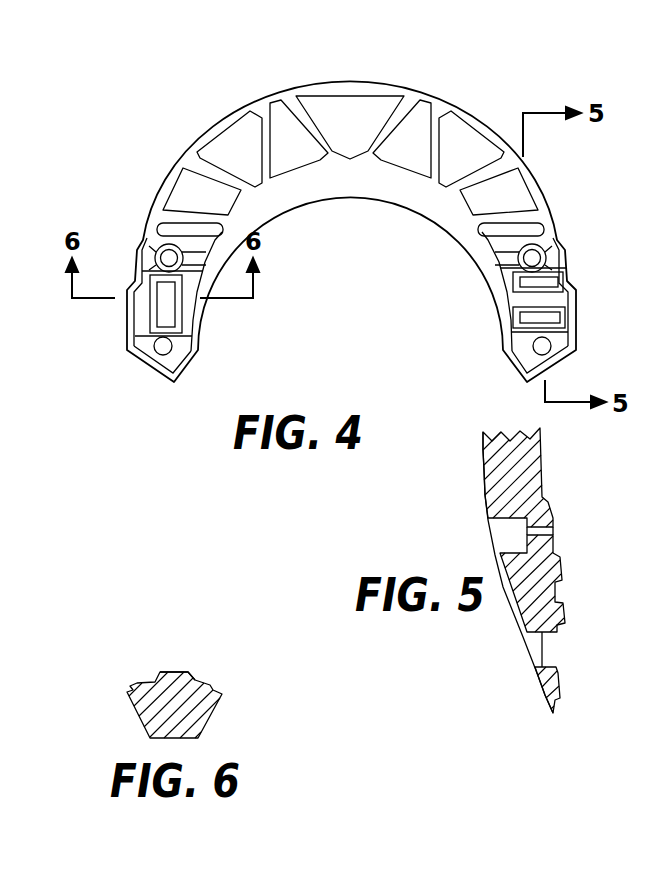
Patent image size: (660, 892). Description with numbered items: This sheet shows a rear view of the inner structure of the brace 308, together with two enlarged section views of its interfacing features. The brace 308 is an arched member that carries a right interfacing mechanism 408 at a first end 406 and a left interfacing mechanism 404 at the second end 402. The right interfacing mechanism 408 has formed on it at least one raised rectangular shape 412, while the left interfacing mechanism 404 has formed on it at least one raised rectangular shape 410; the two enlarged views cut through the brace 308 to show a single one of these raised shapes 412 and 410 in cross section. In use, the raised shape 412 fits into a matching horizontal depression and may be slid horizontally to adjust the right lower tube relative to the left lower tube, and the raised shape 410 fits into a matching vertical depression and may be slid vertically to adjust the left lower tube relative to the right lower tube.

In FIG. 4, the brace 308 is at (373, 83).
In FIG. 5, the brace 308 is at (486, 452).
In FIG. 6, the brace 308 is at (207, 727).
In FIG. 4, the second end 402 is at (152, 368).
In FIG. 4, the left interfacing mechanism 404 is at (200, 328).
In FIG. 4, the first end 406 is at (578, 350).
In FIG. 4, the right interfacing mechanism 408 is at (510, 327).
In FIG. 4, the raised vertical rectangular shape 410 is at (168, 304).
In FIG. 6, the raised vertical rectangular shape 410 is at (168, 672).
In FIG. 4, the raised horizontal rectangular shape 412 is at (557, 287).
In FIG. 5, the raised horizontal rectangular shape 412 is at (562, 572).